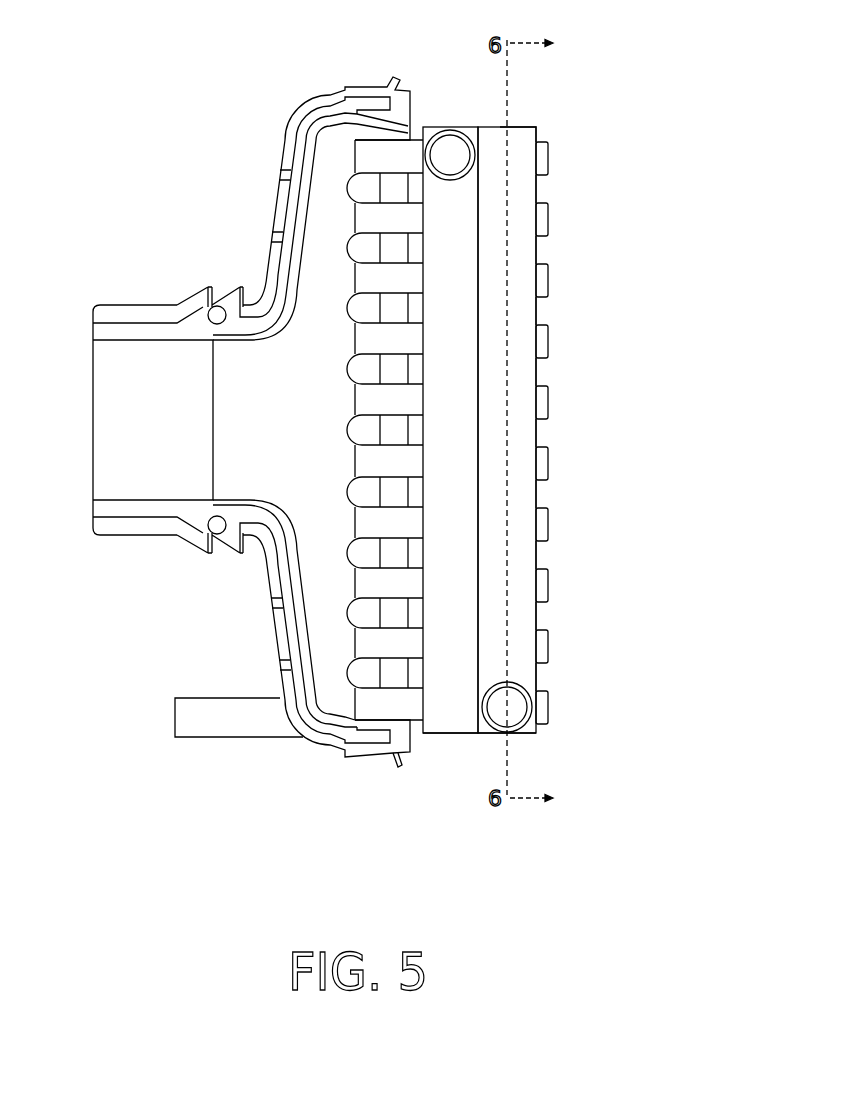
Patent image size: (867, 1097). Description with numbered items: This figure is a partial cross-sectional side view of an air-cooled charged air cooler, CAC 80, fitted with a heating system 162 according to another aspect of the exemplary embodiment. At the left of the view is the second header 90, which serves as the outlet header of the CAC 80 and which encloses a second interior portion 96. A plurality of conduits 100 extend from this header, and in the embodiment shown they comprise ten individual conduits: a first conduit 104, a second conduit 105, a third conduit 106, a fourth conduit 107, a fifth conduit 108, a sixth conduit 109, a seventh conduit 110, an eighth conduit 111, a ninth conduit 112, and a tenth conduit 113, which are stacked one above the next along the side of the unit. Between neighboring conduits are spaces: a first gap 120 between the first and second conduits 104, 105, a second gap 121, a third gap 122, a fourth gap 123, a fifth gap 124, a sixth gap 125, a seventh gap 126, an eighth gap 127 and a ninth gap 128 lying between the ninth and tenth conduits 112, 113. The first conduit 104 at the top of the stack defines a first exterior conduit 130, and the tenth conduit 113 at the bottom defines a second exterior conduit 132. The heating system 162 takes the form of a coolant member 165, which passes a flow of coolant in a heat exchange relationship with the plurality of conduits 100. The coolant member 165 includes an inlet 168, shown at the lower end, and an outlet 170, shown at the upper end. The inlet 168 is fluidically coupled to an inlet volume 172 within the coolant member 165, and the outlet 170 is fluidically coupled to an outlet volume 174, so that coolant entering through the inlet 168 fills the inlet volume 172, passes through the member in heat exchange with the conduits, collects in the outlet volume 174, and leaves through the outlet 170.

The CAC 80 is at (397, 459).
The second header 90 is at (296, 110).
The second interior portion 96 is at (333, 415).
The plurality of conduits 100 is at (397, 441).
The first conduit 104 is at (549, 158).
The second conduit 105 is at (549, 219).
The third conduit 106 is at (549, 280).
The fourth conduit 107 is at (549, 341).
The fifth conduit 108 is at (549, 402).
The sixth conduit 109 is at (549, 463).
The seventh conduit 110 is at (549, 524).
The eighth conduit 111 is at (549, 585).
The ninth conduit 112 is at (549, 646).
The tenth conduit 113 is at (549, 707).
The first gap 120 is at (540, 188).
The second gap 121 is at (540, 249).
The third gap 122 is at (540, 309).
The fourth gap 123 is at (540, 370).
The fifth gap 124 is at (540, 430).
The sixth gap 125 is at (540, 491).
The seventh gap 126 is at (540, 552).
The eighth gap 127 is at (540, 612).
The ninth gap 128 is at (540, 673).
The first exterior conduit 130 is at (541, 140).
The second exterior conduit 132 is at (420, 740).
The heating system 162 is at (471, 773).
The coolant member 165 is at (443, 752).
The inlet 168 is at (533, 733).
The outlet 170 is at (450, 128).
The inlet volume 172 is at (490, 637).
The outlet volume 174 is at (453, 368).